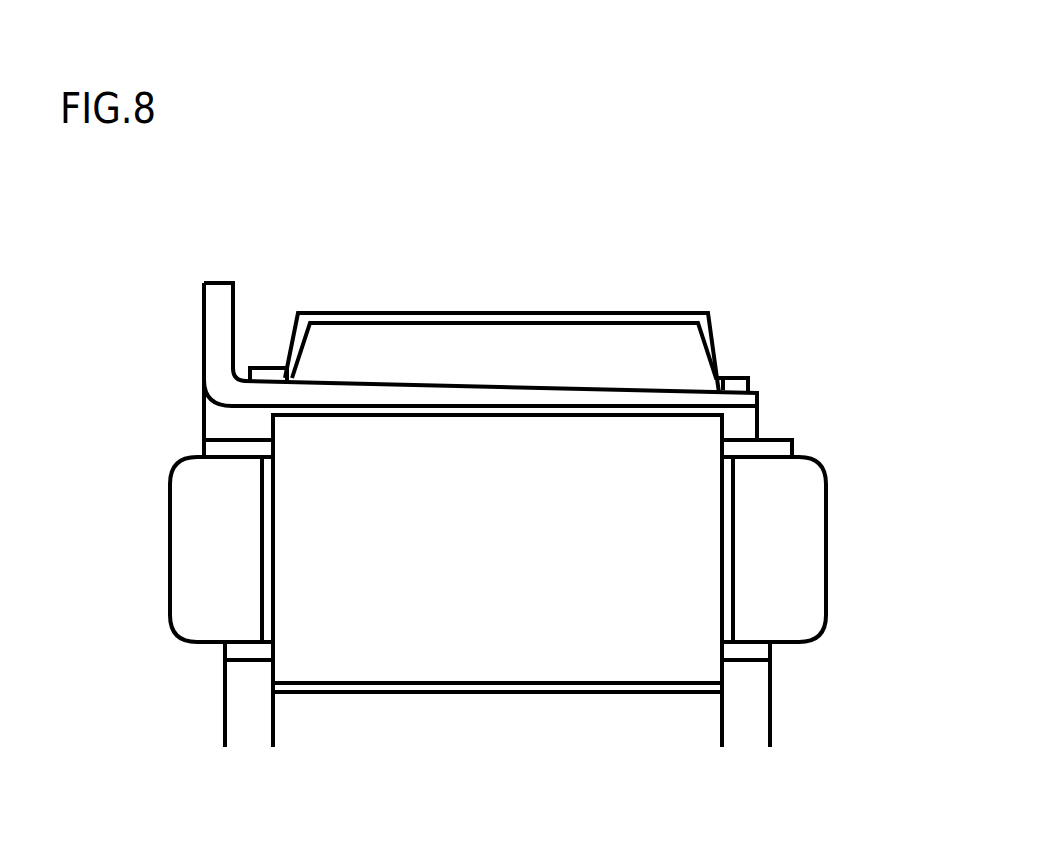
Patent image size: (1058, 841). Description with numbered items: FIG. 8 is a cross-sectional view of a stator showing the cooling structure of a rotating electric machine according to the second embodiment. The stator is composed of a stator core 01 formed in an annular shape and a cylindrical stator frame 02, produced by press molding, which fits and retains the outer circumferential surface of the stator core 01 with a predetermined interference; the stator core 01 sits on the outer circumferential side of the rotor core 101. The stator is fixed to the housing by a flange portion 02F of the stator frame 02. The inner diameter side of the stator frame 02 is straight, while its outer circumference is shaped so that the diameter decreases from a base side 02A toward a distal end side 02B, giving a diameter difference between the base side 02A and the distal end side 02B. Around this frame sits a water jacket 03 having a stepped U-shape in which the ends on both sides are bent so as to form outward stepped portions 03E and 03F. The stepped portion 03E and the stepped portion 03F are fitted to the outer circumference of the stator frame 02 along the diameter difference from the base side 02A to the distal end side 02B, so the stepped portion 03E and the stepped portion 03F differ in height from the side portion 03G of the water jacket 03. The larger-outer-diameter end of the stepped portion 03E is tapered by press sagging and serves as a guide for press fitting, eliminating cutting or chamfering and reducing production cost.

The stator core 01 is at (323, 653).
The rotor core 101 is at (673, 720).
The stator frame 02 is at (474, 407).
The base side 02A is at (243, 380).
The distal end side 02B is at (730, 390).
The flange portion 02F is at (223, 300).
The water jacket 03 is at (499, 246).
The stepped portion 03E is at (275, 362).
The stepped portion 03F is at (739, 378).
The side portion 03G is at (458, 312).